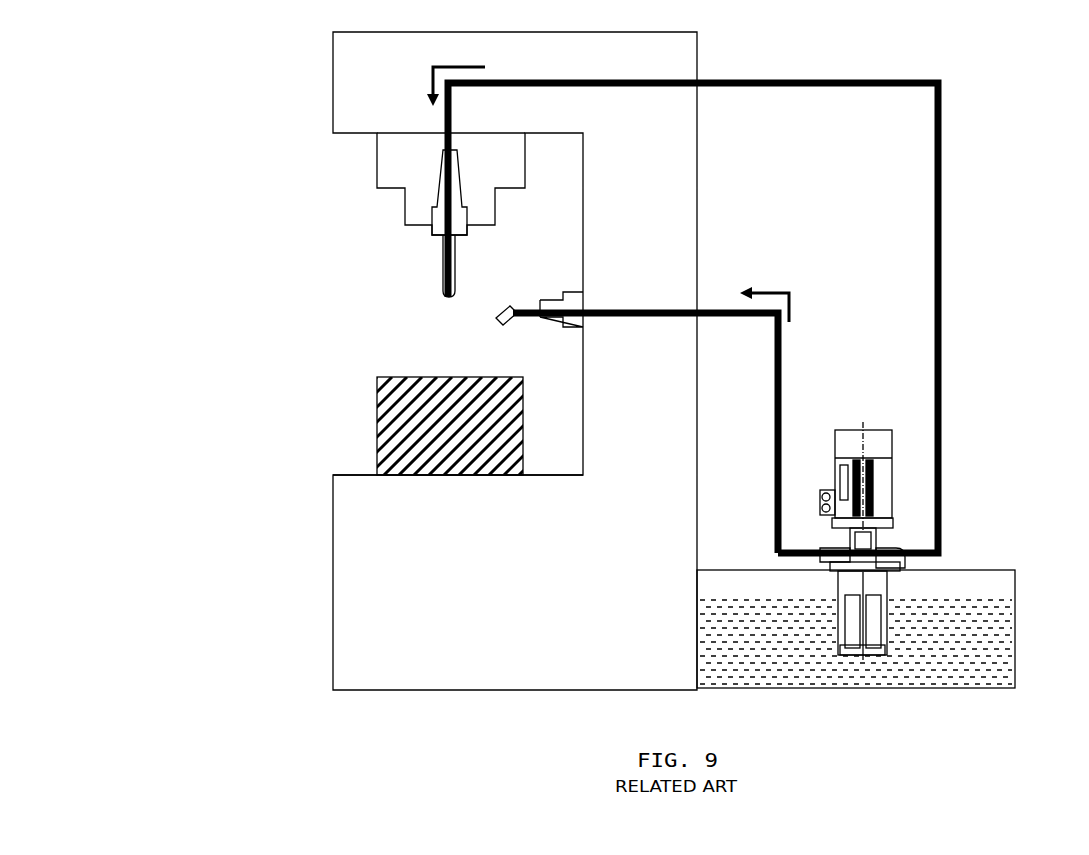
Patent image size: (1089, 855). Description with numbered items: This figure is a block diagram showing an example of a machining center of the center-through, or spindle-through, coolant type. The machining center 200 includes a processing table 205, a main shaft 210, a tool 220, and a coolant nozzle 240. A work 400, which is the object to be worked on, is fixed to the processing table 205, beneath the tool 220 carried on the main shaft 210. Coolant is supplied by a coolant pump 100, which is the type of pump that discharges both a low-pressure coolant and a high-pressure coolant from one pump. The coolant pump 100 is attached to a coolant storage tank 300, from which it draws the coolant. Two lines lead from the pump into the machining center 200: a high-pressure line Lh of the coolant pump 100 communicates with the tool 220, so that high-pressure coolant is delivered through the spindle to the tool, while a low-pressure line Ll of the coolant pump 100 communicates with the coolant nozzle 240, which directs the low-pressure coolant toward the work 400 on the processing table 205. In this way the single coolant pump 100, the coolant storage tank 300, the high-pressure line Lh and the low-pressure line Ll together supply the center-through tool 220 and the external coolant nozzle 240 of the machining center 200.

The machining center 200 is at (246, 226).
The main shaft 210 is at (377, 170).
The tool 220 is at (444, 268).
The processing table 205 is at (355, 470).
The work 400 is at (377, 418).
The coolant nozzle 240 is at (508, 326).
The high-pressure line Lh is at (940, 340).
The low-pressure line Ll is at (781, 386).
The coolant storage tank 300 is at (992, 568).
The coolant pump 100 is at (897, 440).